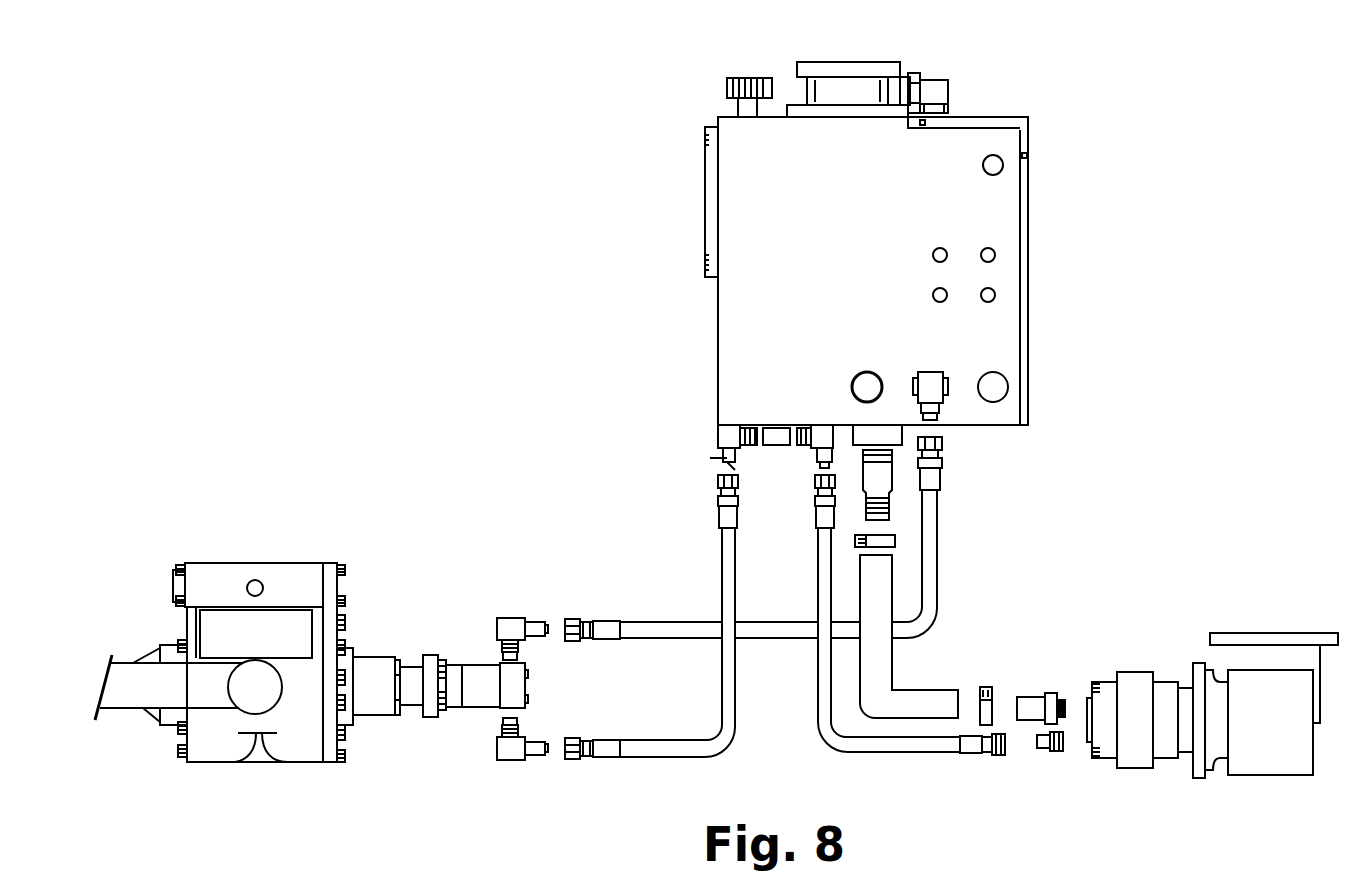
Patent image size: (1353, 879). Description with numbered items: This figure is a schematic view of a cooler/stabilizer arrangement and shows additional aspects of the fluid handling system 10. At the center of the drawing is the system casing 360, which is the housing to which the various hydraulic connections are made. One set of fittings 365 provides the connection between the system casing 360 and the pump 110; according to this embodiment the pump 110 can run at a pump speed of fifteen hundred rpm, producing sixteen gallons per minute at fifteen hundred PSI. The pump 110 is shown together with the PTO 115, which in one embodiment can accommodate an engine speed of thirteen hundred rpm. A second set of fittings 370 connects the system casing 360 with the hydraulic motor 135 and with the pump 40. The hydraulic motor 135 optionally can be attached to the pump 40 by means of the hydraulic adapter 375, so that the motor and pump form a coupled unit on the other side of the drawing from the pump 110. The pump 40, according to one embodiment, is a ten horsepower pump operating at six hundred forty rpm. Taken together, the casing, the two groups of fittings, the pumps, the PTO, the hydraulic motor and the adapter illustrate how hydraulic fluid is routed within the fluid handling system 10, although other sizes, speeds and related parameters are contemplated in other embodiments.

The fluid handling system 10 is at (630, 62).
The pump 40 is at (297, 732).
The pump 110 is at (1172, 692).
The PTO 115 is at (1272, 755).
The hydraulic motor 135 is at (475, 678).
The system casing 360 is at (745, 315).
The fittings 365 is at (1005, 710).
The fittings 370 is at (727, 522).
The hydraulic adapter 375 is at (390, 678).